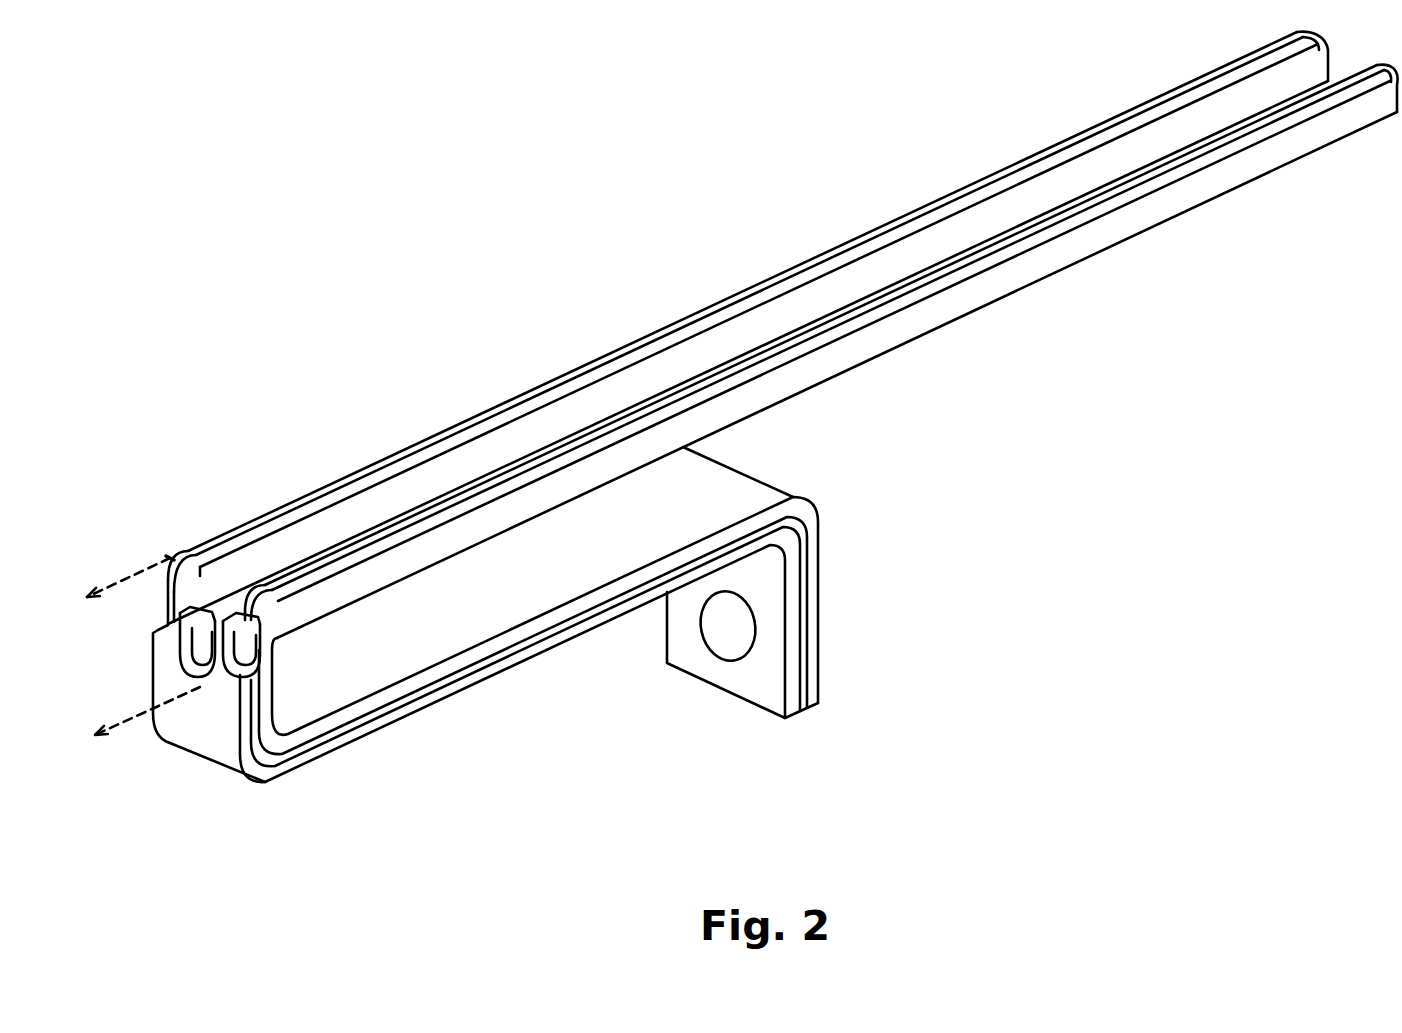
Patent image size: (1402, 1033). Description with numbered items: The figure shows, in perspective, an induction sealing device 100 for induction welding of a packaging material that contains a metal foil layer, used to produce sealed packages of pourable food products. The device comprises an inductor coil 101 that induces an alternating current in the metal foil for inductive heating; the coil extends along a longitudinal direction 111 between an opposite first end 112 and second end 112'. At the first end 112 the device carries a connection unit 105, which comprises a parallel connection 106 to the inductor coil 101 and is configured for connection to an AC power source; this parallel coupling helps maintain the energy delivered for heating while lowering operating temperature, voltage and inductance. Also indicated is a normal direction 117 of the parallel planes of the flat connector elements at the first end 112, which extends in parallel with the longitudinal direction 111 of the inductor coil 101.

The induction sealing device 100 is at (252, 157).
The inductor coil 101 is at (556, 345).
The first end 112 is at (696, 328).
The second end 112' is at (821, 351).
The longitudinal direction 111 is at (160, 555).
The normal direction 117 is at (163, 700).
The connection unit 105 is at (218, 775).
The parallel connection 106 is at (546, 654).